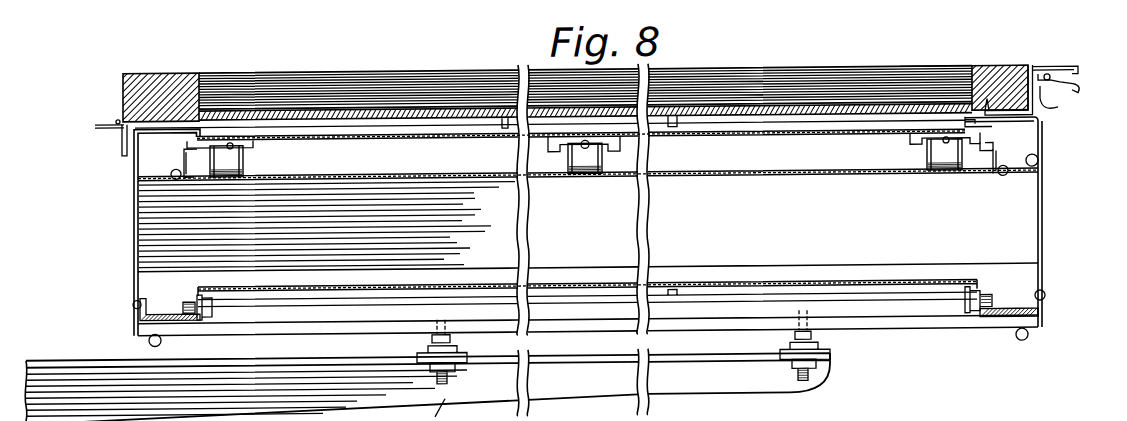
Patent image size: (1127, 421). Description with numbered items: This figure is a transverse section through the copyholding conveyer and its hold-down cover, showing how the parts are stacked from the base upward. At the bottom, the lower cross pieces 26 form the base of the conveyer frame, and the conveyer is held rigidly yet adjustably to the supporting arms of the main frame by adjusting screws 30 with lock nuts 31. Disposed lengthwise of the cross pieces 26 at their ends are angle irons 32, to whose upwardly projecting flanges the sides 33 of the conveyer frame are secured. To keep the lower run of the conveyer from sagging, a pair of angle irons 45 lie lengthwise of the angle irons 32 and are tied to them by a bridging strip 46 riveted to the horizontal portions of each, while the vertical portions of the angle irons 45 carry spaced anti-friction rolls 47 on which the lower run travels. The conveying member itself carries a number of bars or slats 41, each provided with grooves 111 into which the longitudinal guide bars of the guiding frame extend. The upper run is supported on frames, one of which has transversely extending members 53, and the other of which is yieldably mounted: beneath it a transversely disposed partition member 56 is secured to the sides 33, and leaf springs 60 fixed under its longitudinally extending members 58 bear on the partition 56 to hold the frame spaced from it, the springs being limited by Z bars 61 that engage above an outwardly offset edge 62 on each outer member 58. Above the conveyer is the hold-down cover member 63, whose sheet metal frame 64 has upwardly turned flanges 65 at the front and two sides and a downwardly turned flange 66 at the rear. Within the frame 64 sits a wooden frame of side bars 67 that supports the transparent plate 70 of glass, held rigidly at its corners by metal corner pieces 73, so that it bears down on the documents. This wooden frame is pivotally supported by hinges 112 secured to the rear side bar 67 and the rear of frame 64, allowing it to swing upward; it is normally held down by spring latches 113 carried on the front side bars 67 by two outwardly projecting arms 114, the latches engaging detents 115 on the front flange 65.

The lower cross pieces 26 is at (940, 329).
The adjusting screws 30 is at (452, 341).
The lock nuts 31 is at (449, 374).
The angle irons 32 is at (148, 300).
The sides of the conveyer frame 33 is at (133, 241).
The bars or slats 41 is at (404, 130).
The angle irons 45 is at (985, 327).
The bridging strip 46 is at (1046, 328).
The anti-friction rolls 47 is at (207, 324).
The transversely extending members 53 is at (327, 225).
The transversely disposed partition member 56 is at (792, 182).
The longitudinally extending members 58 is at (621, 154).
The leaf springs 60 is at (244, 156).
The Z bars 61 is at (184, 166).
The outwardly offset edge 62 is at (190, 171).
The hold-down cover member 63 is at (953, 73).
The sheet metal frame 64 is at (1059, 117).
The upwardly turned flanges 65 is at (1031, 82).
The downwardly turned flange 66 is at (121, 141).
The side bars 67 is at (176, 82).
The transparent plate 70 is at (792, 118).
The metal corner pieces 73 is at (985, 131).
The grooves 111 is at (503, 131).
The hinges 112 is at (114, 122).
The spring latches 113 is at (1078, 94).
The outwardly projecting arms 114 is at (1079, 78).
The detents 115 is at (1050, 84).